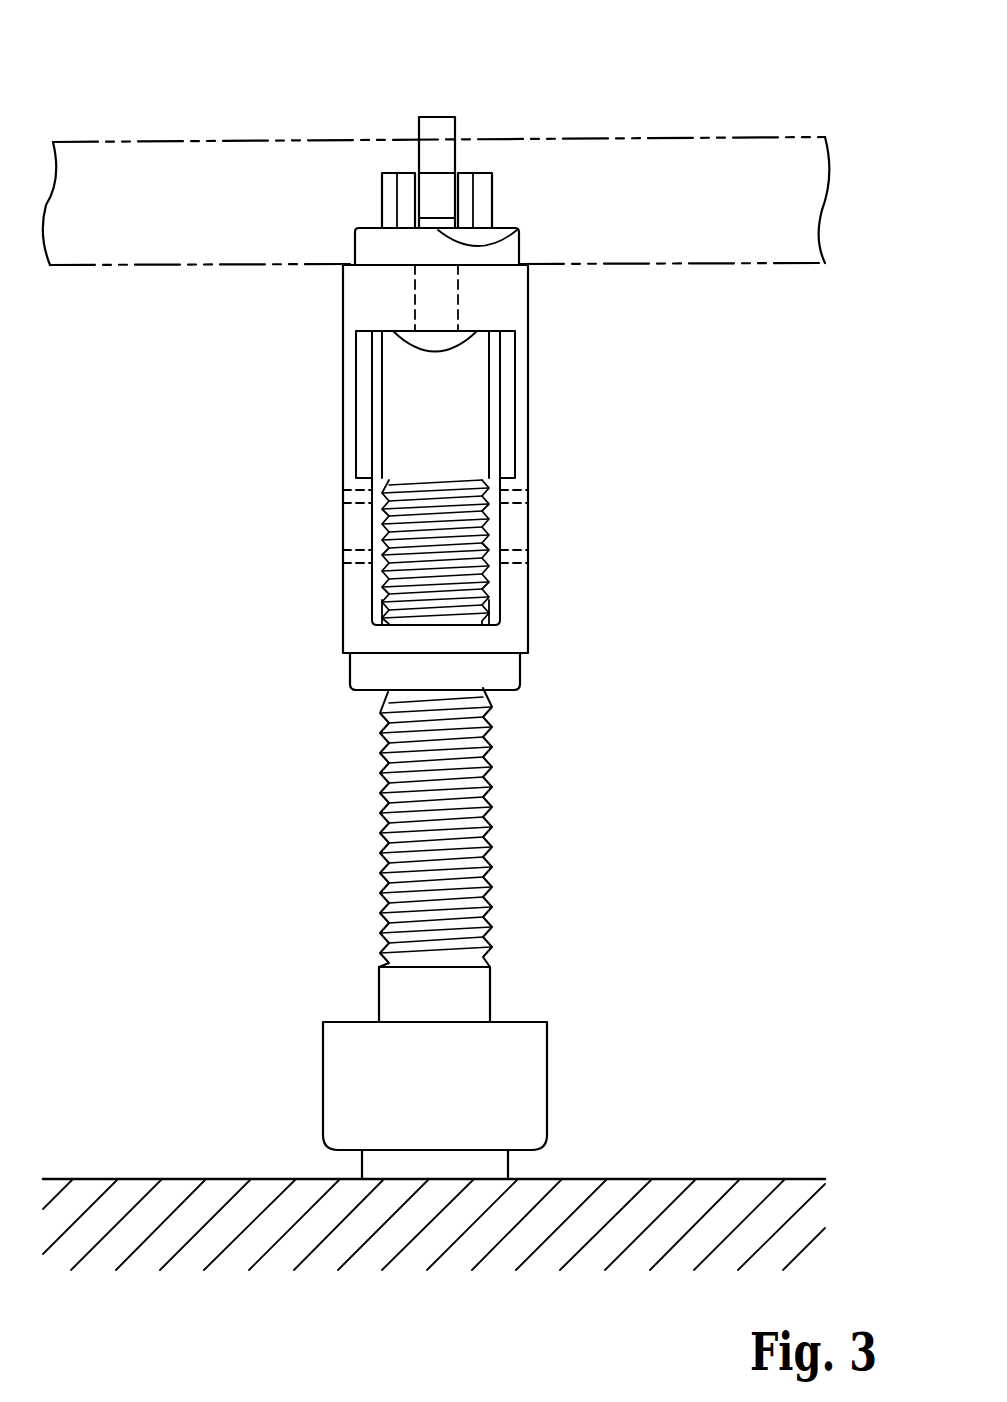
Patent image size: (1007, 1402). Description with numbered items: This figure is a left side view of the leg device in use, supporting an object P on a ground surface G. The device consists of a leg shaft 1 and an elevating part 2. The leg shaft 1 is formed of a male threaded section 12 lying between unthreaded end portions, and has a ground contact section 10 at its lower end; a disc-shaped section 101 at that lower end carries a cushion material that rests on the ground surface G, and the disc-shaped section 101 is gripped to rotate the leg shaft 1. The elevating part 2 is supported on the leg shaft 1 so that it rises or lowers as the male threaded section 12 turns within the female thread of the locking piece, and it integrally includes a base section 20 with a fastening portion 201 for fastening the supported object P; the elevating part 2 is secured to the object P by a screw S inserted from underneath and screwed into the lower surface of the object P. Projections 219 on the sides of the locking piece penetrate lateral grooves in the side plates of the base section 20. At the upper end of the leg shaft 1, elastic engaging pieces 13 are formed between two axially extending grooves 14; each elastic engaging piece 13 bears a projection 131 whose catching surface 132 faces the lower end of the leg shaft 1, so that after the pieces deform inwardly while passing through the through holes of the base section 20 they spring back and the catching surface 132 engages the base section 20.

The supported object P is at (728, 167).
The elastic engaging pieces 13 is at (440, 125).
The grooves 14 is at (405, 178).
The projection 131 is at (443, 208).
The catching surface 132 is at (517, 230).
The fastening portion 201 is at (355, 291).
The screw S is at (433, 343).
The projections 219 is at (355, 530).
The elevating part 2 is at (518, 594).
The base section 20 is at (518, 632).
The leg shaft 1 is at (487, 855).
The male threaded section 12 is at (463, 772).
The ground contact section 10 is at (520, 1087).
The disc-shaped section 101 is at (528, 1127).
The ground surface G is at (768, 1177).